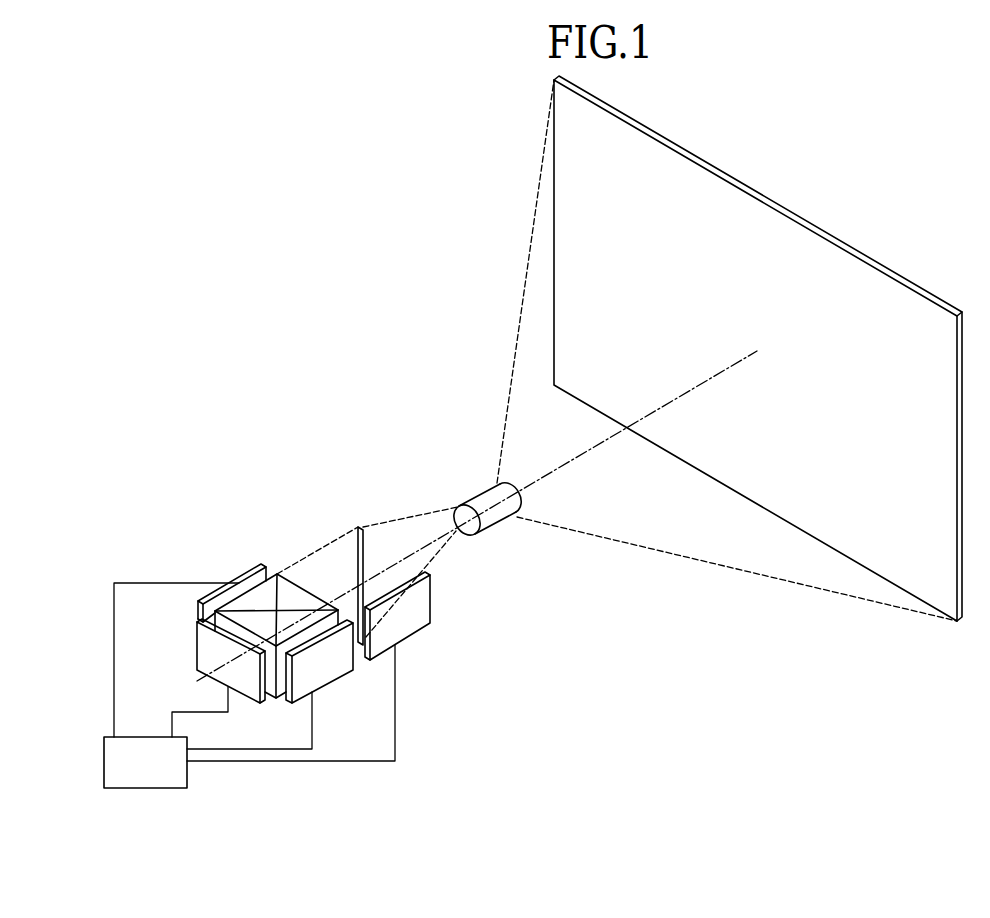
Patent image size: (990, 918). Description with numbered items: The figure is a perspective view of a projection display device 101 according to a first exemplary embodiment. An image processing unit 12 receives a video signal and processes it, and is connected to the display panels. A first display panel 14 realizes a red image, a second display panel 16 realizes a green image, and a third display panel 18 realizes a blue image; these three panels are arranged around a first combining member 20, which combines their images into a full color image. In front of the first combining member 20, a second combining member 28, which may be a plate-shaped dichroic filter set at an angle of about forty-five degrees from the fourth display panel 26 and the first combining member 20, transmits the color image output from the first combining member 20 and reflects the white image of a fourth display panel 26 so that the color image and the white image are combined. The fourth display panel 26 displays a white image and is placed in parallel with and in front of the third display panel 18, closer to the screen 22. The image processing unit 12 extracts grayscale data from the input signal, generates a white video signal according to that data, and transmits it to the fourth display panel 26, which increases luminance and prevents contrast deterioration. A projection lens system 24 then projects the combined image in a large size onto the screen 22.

The projection display device 101 is at (293, 221).
The image processing unit 12 is at (158, 774).
The first display panel 14 is at (239, 581).
The second display panel 16 is at (212, 647).
The third display panel 18 is at (323, 677).
The first combining member 20 is at (283, 588).
The screen 22 is at (876, 298).
The projection lens system 24 is at (483, 498).
The fourth display panel 26 is at (402, 628).
The second combining member 28 is at (361, 527).